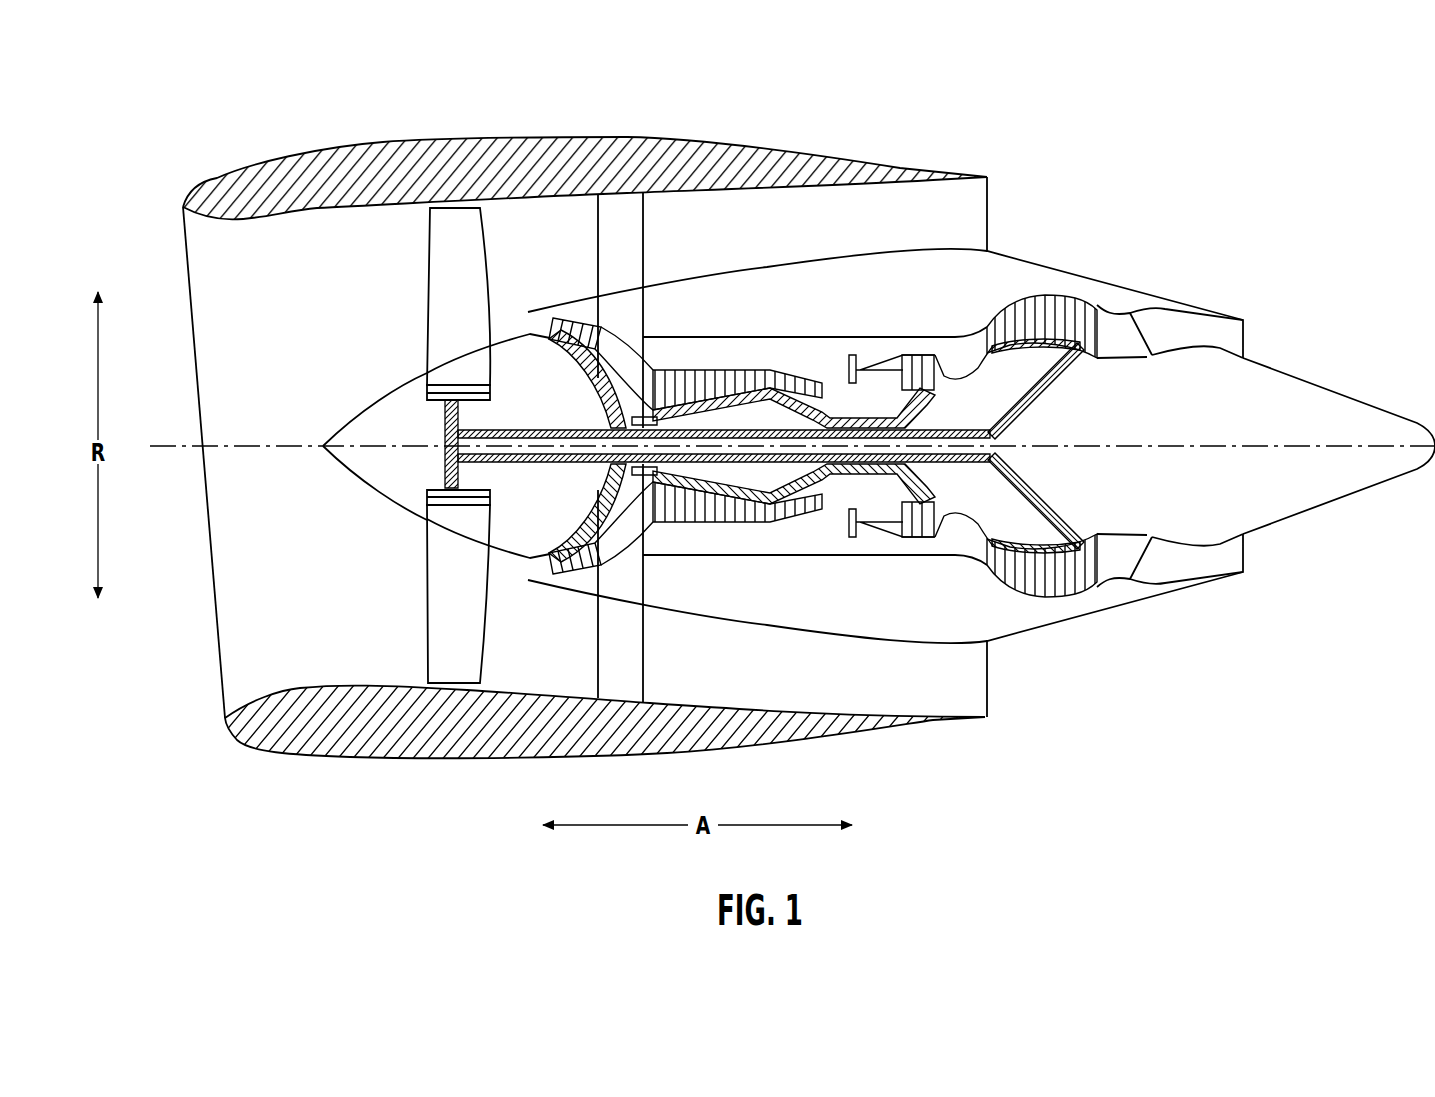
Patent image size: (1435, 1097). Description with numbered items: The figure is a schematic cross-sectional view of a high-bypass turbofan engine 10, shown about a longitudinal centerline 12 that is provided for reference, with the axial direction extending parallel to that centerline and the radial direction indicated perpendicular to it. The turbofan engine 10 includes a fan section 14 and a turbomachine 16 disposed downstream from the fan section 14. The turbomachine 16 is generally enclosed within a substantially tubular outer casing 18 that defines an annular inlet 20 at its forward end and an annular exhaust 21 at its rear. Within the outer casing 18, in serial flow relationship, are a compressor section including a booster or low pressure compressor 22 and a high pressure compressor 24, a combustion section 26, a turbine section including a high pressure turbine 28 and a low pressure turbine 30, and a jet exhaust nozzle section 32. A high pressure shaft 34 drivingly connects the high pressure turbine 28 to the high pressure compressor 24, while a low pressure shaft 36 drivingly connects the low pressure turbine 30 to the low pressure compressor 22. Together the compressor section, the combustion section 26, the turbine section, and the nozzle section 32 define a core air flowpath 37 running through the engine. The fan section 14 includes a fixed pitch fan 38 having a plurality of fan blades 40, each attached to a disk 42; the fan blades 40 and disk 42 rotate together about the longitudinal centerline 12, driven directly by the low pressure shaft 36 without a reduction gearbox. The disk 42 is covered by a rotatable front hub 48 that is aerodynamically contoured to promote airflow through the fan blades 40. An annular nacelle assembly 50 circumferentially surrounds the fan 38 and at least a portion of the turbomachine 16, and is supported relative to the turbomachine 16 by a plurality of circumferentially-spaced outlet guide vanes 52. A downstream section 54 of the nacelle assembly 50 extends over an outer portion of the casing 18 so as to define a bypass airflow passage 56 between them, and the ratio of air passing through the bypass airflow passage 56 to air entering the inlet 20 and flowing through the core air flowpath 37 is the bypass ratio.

The turbofan engine 10 is at (1158, 146).
The longitudinal centerline 12 is at (1173, 443).
The fan section 14 is at (378, 228).
The turbomachine 16 is at (788, 314).
The outer casing 18 is at (820, 632).
The annular inlet 20 is at (516, 585).
The annular exhaust 21 is at (1252, 573).
The low pressure compressor 22 is at (599, 543).
The high pressure compressor 24 is at (677, 518).
The combustion section 26 is at (870, 522).
The high pressure turbine 28 is at (955, 528).
The low pressure turbine 30 is at (1081, 598).
The jet exhaust nozzle section 32 is at (1149, 576).
The high pressure shaft 34 is at (870, 416).
The low pressure shaft 36 is at (990, 430).
The core air flowpath 37 is at (960, 541).
The fixed pitch fan 38 is at (385, 506).
The fan blades 40 is at (426, 617).
The disk 42 is at (443, 393).
The front hub 48 is at (337, 467).
The nacelle assembly 50 is at (482, 760).
The outlet guide vanes 52 is at (643, 230).
The downstream section 54 is at (922, 169).
The bypass airflow passage 56 is at (848, 233).